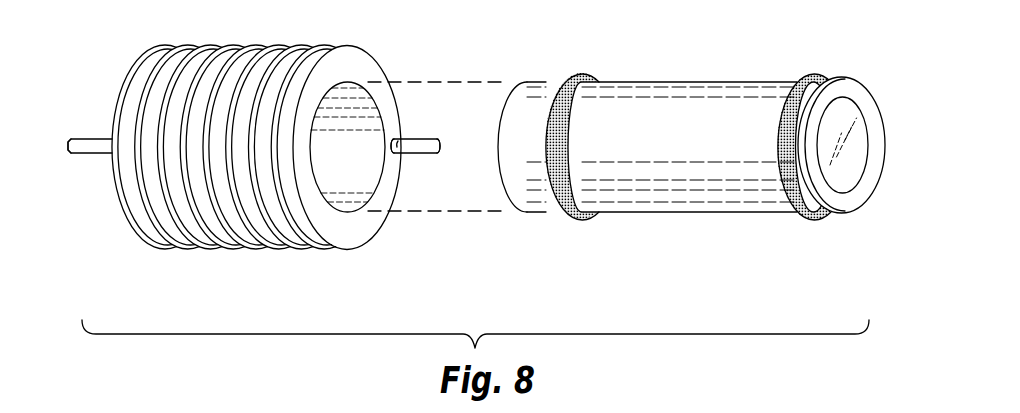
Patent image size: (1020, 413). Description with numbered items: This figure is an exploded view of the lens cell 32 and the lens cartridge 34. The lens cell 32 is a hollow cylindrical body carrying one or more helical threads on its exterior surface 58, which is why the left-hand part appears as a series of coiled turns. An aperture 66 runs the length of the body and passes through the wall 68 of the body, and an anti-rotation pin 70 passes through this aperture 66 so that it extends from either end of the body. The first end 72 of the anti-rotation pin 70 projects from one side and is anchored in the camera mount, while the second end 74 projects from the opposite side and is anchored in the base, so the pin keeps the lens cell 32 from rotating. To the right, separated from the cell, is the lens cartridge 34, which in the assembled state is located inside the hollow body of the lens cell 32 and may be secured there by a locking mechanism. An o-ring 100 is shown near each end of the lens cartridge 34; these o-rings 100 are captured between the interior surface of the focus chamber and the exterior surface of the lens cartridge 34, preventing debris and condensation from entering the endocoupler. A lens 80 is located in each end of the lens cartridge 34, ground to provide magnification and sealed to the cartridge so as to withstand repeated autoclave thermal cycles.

The lens cell 32 is at (118, 195).
The lens cartridge 34 is at (669, 83).
The exterior surface 58 is at (157, 183).
The aperture 66 is at (402, 140).
The wall 68 is at (348, 222).
The anti-rotation pin 70 is at (100, 146).
The first end 72 is at (70, 139).
The second end 74 is at (442, 146).
The lens 80 is at (853, 163).
The o-ring 100 is at (597, 72).